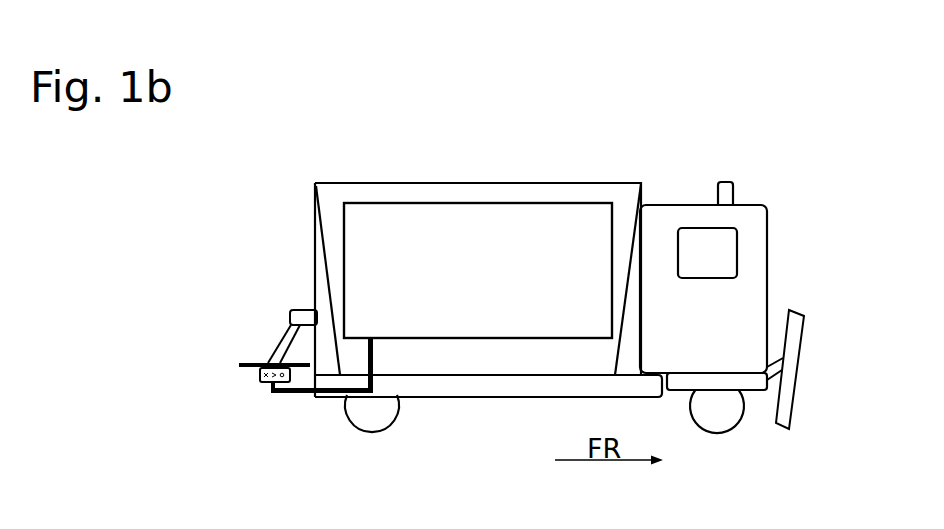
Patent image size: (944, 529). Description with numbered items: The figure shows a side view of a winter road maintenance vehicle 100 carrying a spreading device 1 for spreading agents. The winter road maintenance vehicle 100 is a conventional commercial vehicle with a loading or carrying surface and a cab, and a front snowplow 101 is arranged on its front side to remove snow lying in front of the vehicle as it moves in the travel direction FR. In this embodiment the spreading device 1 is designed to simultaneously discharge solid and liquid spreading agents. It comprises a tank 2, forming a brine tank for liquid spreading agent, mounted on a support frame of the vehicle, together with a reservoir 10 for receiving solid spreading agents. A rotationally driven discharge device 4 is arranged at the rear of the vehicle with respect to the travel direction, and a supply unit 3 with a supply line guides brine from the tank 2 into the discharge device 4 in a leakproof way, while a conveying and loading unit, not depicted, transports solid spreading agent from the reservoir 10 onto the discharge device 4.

The winter road maintenance vehicle 100 is at (328, 92).
The spreading device 1 is at (297, 207).
The reservoir 10 is at (407, 195).
The tank 2 is at (493, 262).
The supply unit 3 is at (298, 398).
The discharge device 4 is at (243, 347).
The snowplow 101 is at (793, 330).